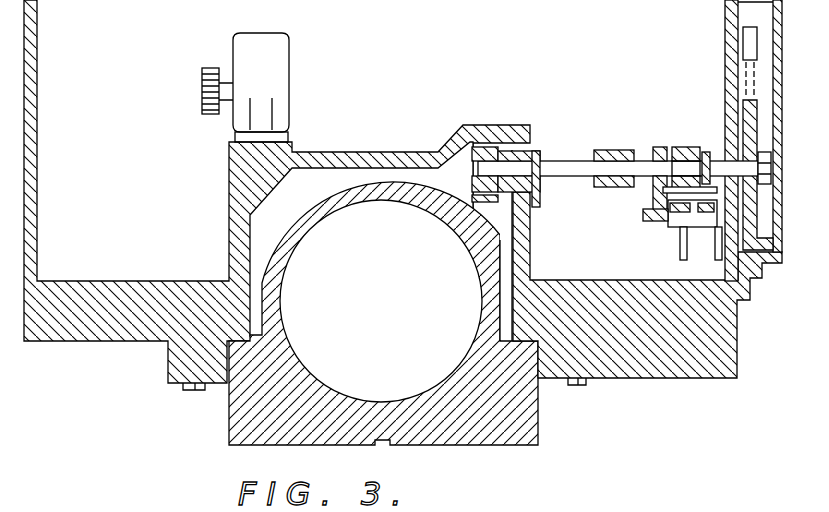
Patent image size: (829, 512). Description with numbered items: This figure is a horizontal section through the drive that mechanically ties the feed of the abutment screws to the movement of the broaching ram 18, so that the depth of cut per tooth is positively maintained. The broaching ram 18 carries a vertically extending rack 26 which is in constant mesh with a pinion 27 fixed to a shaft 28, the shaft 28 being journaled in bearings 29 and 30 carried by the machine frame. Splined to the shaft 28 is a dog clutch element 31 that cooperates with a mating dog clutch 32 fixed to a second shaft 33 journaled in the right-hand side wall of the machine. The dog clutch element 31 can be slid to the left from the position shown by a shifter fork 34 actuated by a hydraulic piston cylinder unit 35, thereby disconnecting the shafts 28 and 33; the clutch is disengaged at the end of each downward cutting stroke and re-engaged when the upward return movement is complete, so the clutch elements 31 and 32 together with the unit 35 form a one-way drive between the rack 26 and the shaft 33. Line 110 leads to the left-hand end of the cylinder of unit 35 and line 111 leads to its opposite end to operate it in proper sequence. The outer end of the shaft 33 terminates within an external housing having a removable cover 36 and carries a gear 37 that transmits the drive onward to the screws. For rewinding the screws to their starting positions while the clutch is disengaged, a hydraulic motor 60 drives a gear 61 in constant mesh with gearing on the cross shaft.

The broaching ram 18 is at (240, 430).
The rack 26 is at (452, 212).
The pinion 27 is at (477, 182).
The shaft 28 is at (559, 160).
The bearing 29 is at (537, 150).
The bearing 30 is at (613, 150).
The dog clutch element 31 is at (660, 148).
The mating dog clutch 32 is at (690, 146).
The shaft 33 is at (711, 155).
The shifter fork 34 is at (652, 200).
The hydraulic piston cylinder unit 35 is at (677, 237).
The removable cover 36 is at (757, 272).
The gear 37 is at (753, 218).
The hydraulic motor 60 is at (272, 65).
The gear 61 is at (202, 80).
The line 110 is at (680, 253).
The line 111 is at (720, 255).